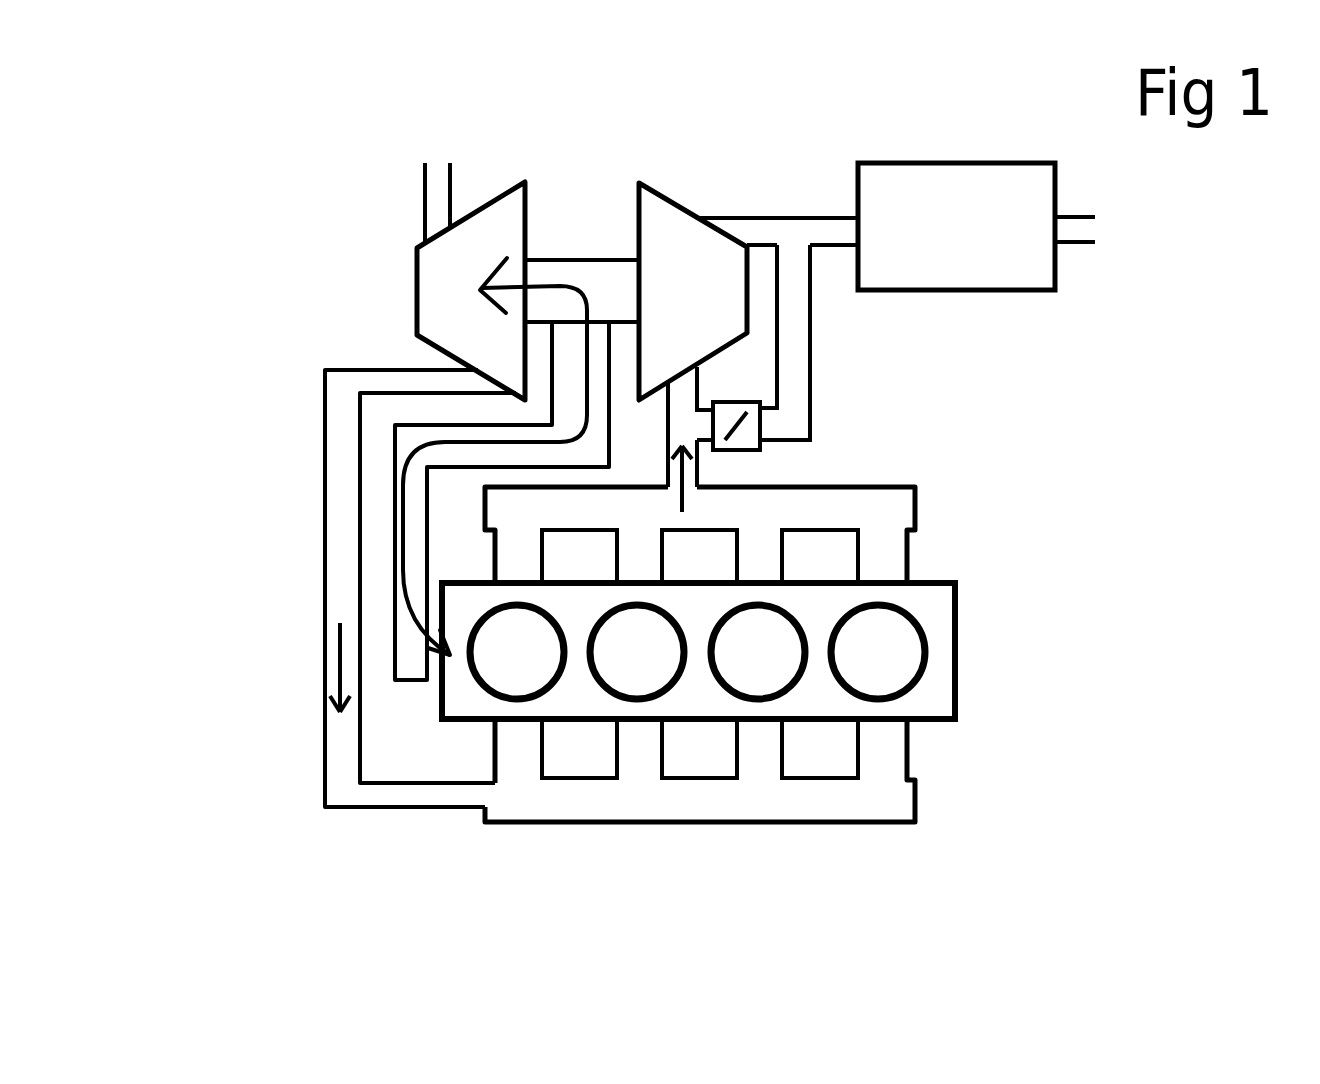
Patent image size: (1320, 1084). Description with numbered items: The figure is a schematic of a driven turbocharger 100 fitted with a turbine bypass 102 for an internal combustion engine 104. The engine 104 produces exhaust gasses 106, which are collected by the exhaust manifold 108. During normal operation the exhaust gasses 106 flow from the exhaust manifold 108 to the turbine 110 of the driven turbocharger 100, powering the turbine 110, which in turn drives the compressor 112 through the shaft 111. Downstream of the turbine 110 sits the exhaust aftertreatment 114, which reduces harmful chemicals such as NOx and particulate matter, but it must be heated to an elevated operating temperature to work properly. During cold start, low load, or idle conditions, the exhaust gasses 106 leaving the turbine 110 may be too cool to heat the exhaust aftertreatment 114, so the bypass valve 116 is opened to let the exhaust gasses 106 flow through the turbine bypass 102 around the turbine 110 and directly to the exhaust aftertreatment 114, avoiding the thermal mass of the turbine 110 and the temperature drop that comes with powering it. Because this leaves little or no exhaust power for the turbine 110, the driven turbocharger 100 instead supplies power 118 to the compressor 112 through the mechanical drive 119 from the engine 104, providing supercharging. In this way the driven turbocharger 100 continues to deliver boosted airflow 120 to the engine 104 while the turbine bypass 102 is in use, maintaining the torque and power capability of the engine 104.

The driven turbocharger 100 is at (306, 135).
The turbine bypass 102 is at (790, 329).
The internal combustion engine 104 is at (680, 710).
The exhaust gasses 106 is at (680, 497).
The exhaust manifold 108 is at (883, 530).
The turbine 110 is at (712, 282).
The shaft 111 is at (585, 273).
The compressor 112 is at (478, 243).
The exhaust aftertreatment 114 is at (947, 210).
The bypass valve 116 is at (745, 433).
The power 118 is at (478, 291).
The mechanical drive 119 is at (403, 445).
The boosted airflow 120 is at (337, 660).